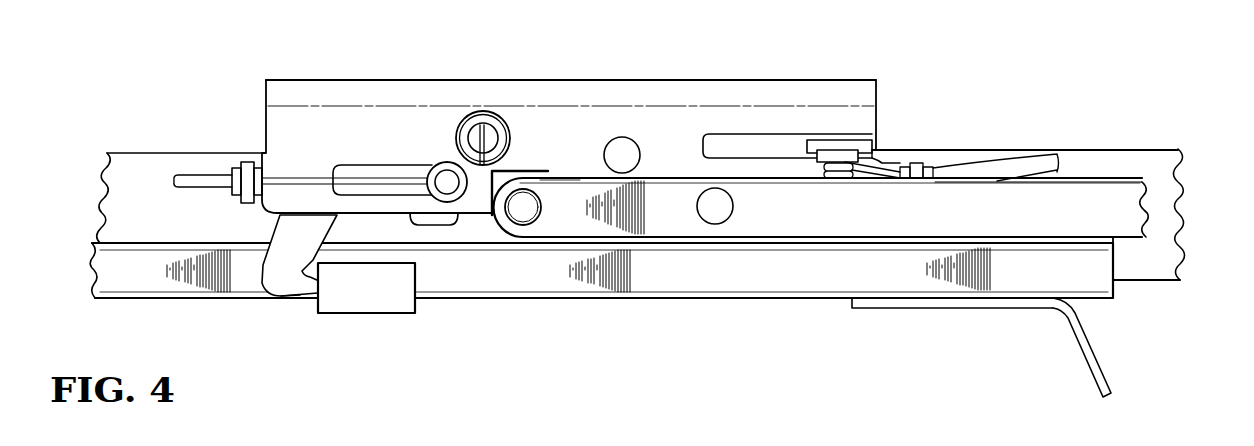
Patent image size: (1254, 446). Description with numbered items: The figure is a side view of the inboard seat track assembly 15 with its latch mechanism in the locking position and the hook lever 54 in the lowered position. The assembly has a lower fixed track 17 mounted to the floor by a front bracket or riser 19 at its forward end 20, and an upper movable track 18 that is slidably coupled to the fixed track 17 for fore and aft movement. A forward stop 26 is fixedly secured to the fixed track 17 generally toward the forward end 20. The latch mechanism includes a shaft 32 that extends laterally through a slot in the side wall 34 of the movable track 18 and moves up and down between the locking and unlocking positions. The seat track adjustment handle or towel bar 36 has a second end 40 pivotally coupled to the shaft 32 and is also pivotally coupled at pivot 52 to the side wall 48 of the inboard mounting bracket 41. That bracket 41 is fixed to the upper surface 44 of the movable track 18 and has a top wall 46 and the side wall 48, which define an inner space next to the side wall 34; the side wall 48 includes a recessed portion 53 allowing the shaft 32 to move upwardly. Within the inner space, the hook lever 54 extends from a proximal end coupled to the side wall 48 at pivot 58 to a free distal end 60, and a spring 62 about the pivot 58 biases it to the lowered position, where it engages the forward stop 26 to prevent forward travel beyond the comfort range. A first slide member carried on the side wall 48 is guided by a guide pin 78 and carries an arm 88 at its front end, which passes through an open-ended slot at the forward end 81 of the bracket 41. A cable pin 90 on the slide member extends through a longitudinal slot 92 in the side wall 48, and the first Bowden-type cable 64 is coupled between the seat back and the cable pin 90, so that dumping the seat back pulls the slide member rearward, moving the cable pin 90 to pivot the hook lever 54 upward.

The inboard seat track assembly 15 is at (1152, 135).
The lower fixed track 17 is at (817, 283).
The upper movable track 18 is at (1112, 158).
The front bracket or riser 19 is at (1090, 363).
The forward end 20 is at (1097, 280).
The forward stop 26 is at (363, 303).
The shaft 32 is at (523, 210).
The side wall 34 is at (130, 222).
The seat track adjustment handle or towel bar 36 is at (1125, 220).
The second end 40 is at (550, 225).
The inboard mounting bracket 41 is at (575, 80).
The upper surface 44 is at (990, 148).
The top wall 46 is at (327, 79).
The side wall 48 is at (570, 139).
The pivot 52 is at (715, 222).
The recessed portion 53 is at (523, 170).
The hook lever 54 is at (285, 235).
The pivot 58 is at (492, 135).
The free distal end 60 is at (293, 283).
The spring 62 is at (462, 115).
The first Bowden-type cable 64 is at (198, 183).
The guide pin 78 is at (623, 148).
The forward end 81 is at (877, 87).
The arm 88 is at (838, 143).
The cable pin 90 is at (447, 182).
The slot 92 is at (378, 163).